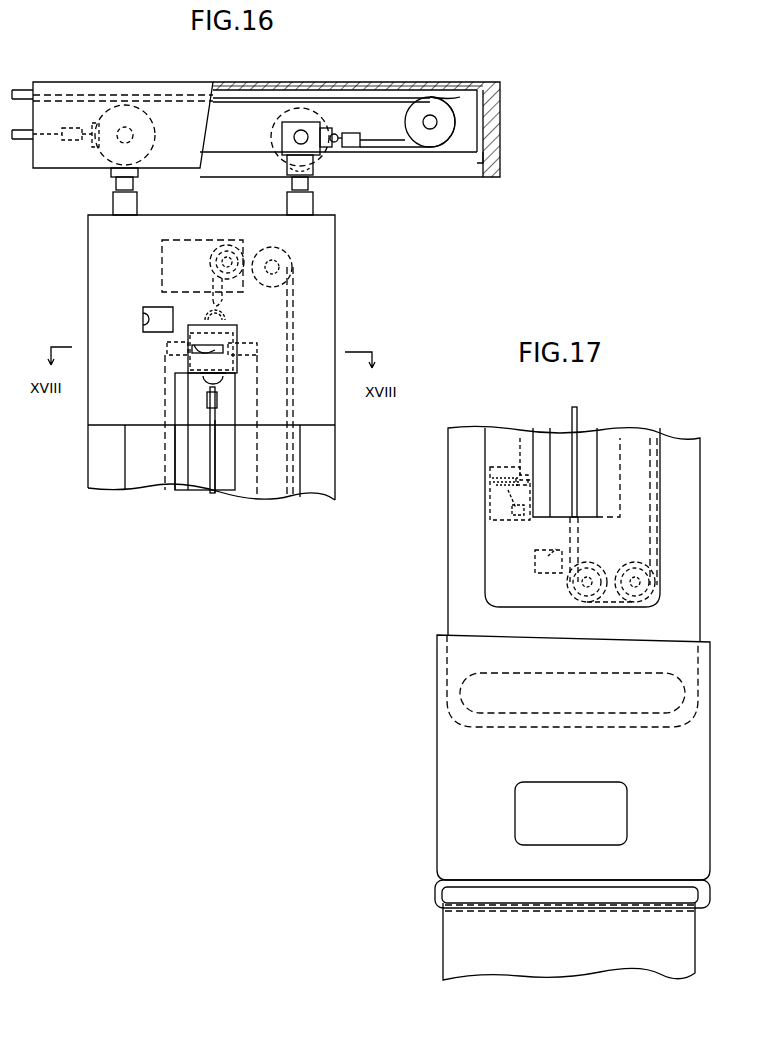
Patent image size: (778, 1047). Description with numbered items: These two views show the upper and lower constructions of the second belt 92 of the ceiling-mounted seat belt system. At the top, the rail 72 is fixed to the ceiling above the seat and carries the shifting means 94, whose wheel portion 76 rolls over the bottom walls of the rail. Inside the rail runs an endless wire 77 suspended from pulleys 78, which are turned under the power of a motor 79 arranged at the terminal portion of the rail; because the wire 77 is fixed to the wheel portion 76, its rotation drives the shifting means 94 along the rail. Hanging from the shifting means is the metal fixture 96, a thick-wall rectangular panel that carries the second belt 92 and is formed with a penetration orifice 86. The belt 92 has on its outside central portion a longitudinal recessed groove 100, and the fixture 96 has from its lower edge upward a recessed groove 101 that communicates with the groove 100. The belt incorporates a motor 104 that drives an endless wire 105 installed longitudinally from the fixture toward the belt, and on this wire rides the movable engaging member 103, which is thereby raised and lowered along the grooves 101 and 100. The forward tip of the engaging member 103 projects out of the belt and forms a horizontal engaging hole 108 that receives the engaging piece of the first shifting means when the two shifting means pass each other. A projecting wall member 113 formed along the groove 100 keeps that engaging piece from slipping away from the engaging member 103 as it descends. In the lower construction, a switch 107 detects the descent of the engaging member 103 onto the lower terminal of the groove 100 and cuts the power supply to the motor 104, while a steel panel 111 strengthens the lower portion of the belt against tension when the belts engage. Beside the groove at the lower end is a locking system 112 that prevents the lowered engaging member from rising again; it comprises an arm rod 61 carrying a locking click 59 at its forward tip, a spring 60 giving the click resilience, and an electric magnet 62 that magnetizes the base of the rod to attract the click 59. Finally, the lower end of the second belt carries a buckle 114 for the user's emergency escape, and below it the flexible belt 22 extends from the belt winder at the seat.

In FIG. 16, the rail 72 is at (147, 82).
In FIG. 16, the wheel portion 76 is at (110, 112).
In FIG. 16, the endless wire 77 is at (256, 92).
In FIG. 16, the pulleys 78 is at (430, 108).
In FIG. 16, the motor 79 is at (455, 95).
In FIG. 16, the shifting means 94 is at (346, 235).
In FIG. 16, the metal fixture 96 is at (98, 404).
In FIG. 16, the second belt 92 is at (98, 487).
In FIG. 17, the second belt 92 is at (697, 453).
In FIG. 16, the motor 104 is at (168, 257).
In FIG. 16, the penetration orifice 86 is at (143, 318).
In FIG. 16, the engaging hole 108 is at (167, 346).
In FIG. 16, the movable engaging member 103 is at (237, 327).
In FIG. 16, the recessed groove 101 is at (232, 405).
In FIG. 16, the recessed groove 100 is at (190, 460).
In FIG. 17, the recessed groove 100 is at (595, 452).
In FIG. 16, the projecting wall member 113 is at (178, 477).
In FIG. 17, the projecting wall member 113 is at (545, 435).
In FIG. 16, the endless wire 105 is at (213, 474).
In FIG. 17, the endless wire 105 is at (577, 425).
In FIG. 17, the steel panel 111 is at (642, 513).
In FIG. 17, the locking system 112 is at (501, 456).
In FIG. 17, the locking click 59 is at (522, 470).
In FIG. 17, the spring 60 is at (490, 480).
In FIG. 17, the arm rod 61 is at (500, 507).
In FIG. 17, the electric magnet 62 is at (505, 525).
In FIG. 17, the switch 107 is at (540, 576).
In FIG. 17, the buckle 114 is at (440, 823).
In FIG. 17, the belt 22 is at (580, 960).